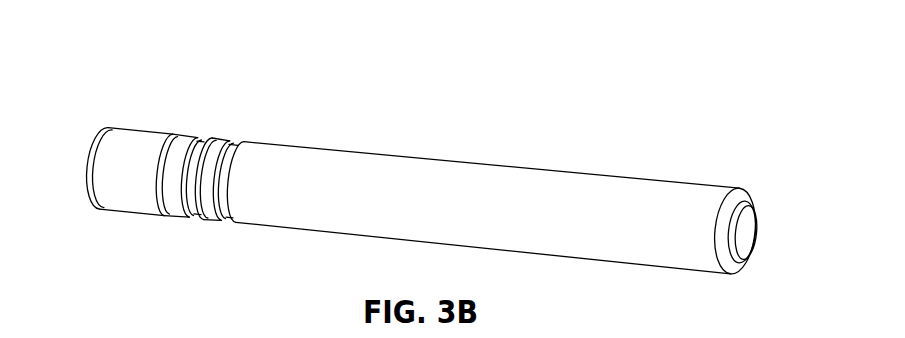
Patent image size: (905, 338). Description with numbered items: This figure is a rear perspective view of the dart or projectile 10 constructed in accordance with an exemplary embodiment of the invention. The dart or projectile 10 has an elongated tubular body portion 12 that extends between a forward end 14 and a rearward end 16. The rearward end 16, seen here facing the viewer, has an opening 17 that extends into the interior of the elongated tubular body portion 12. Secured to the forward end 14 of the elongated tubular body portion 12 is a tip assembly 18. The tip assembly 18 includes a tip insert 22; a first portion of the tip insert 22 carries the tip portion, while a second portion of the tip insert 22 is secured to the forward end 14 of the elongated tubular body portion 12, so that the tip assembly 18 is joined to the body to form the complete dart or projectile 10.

The dart or projectile 10 is at (418, 166).
The elongated tubular body portion 12 is at (452, 180).
The forward end 14 is at (215, 142).
The rearward end 16 is at (741, 188).
The opening 17 is at (750, 239).
The tip assembly 18 is at (102, 164).
The tip insert 22 is at (87, 186).